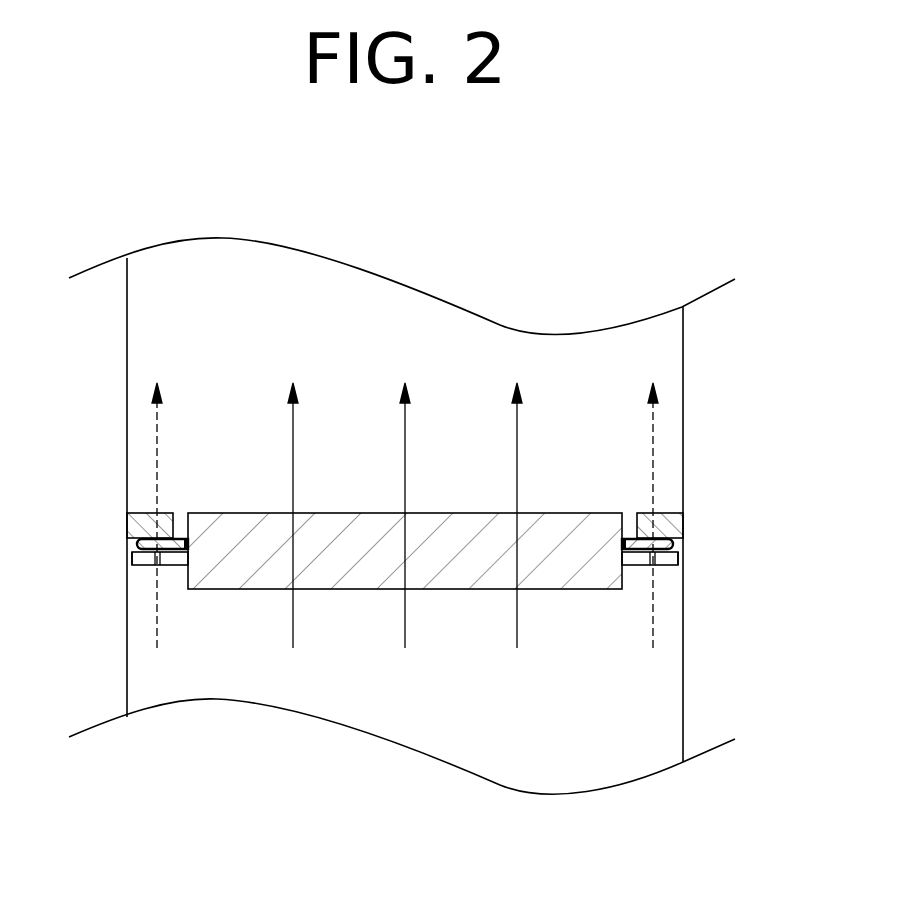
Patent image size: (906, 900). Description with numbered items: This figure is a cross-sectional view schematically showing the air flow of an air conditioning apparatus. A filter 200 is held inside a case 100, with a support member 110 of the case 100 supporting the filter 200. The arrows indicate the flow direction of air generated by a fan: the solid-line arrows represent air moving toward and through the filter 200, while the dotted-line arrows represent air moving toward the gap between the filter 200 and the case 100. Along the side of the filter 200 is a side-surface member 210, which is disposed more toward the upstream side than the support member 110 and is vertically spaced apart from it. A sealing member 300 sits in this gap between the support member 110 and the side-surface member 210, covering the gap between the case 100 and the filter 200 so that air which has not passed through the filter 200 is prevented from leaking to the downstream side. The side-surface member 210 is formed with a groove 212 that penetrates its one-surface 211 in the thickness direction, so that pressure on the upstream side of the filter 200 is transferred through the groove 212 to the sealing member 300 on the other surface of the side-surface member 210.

The case 100 is at (684, 451).
The support member 110 is at (135, 524).
The filter 200 is at (353, 538).
The side-surface member 210 is at (170, 565).
The one-surface 211 is at (143, 565).
The groove 212 is at (158, 565).
The sealing member 300 is at (133, 545).